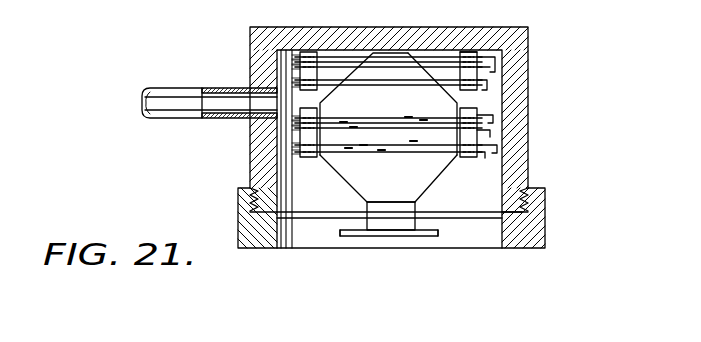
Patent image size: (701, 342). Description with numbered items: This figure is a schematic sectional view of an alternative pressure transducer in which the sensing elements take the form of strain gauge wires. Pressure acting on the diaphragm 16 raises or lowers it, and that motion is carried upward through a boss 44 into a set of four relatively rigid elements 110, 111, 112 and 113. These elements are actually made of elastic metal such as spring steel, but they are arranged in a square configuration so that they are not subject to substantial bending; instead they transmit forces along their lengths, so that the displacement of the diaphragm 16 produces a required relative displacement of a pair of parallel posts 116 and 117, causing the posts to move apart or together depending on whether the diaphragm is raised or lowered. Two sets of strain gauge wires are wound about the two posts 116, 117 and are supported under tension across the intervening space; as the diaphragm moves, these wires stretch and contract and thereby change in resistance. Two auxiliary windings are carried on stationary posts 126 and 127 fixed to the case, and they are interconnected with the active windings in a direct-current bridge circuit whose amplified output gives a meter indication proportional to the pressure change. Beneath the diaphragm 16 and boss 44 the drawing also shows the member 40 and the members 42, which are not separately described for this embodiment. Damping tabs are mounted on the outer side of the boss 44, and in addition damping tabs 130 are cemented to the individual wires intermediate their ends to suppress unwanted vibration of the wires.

The diaphragm 16 is at (484, 219).
The mounting plate 40 is at (362, 232).
The gasket 42 is at (340, 234).
The boss 44 is at (388, 222).
The rigid element 110 is at (452, 163).
The rigid element 111 is at (457, 104).
The rigid element 112 is at (345, 183).
The rigid element 113 is at (331, 102).
The post 116 is at (300, 133).
The post 117 is at (465, 158).
The stationary post 126 is at (470, 68).
The stationary post 127 is at (300, 70).
The damping tabs 130 is at (425, 141).